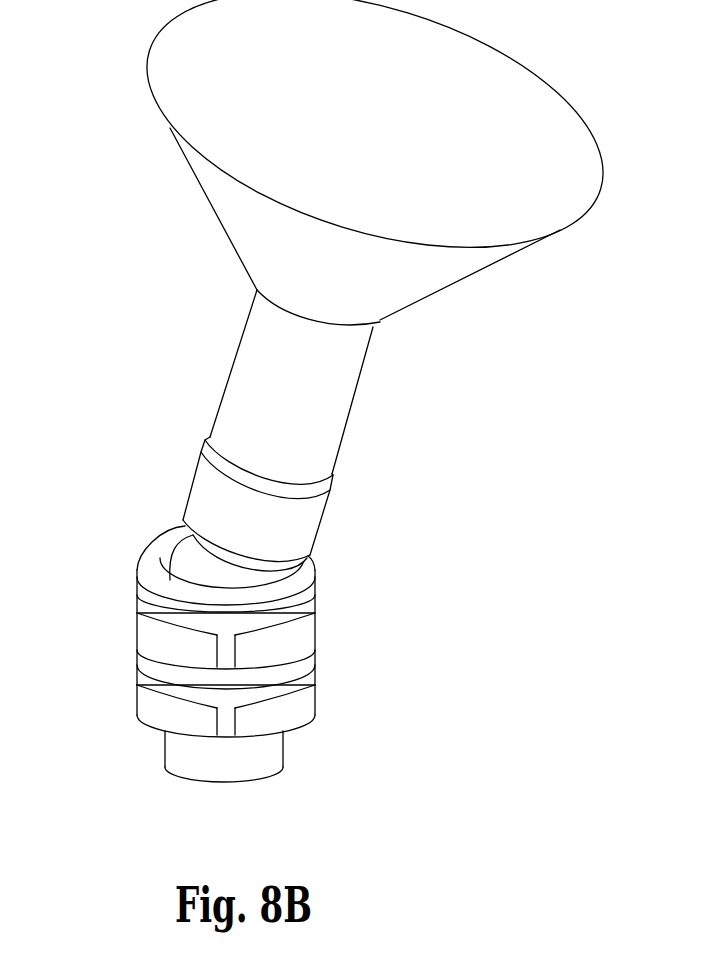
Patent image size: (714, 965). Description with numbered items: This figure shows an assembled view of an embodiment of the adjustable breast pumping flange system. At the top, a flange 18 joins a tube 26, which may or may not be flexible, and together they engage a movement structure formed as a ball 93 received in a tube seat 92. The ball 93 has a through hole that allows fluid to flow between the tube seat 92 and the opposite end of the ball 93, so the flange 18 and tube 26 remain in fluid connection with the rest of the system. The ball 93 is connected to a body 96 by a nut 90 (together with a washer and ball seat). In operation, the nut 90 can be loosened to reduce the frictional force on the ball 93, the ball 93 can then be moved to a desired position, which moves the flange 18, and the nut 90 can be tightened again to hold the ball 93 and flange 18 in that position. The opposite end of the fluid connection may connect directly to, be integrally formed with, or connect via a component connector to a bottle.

The flange 18 is at (192, 173).
The tube 26 is at (250, 387).
The tube seat 92 is at (196, 470).
The ball 93 is at (183, 565).
The nut 90 is at (137, 625).
The body 96 is at (137, 697).